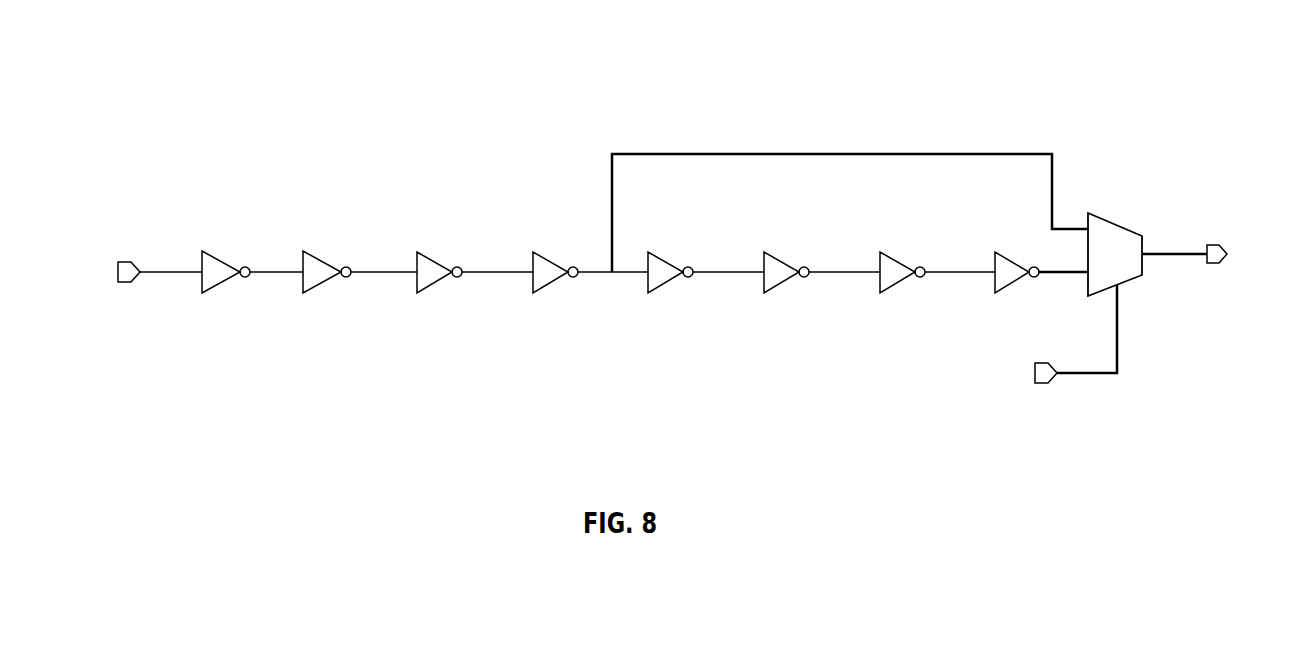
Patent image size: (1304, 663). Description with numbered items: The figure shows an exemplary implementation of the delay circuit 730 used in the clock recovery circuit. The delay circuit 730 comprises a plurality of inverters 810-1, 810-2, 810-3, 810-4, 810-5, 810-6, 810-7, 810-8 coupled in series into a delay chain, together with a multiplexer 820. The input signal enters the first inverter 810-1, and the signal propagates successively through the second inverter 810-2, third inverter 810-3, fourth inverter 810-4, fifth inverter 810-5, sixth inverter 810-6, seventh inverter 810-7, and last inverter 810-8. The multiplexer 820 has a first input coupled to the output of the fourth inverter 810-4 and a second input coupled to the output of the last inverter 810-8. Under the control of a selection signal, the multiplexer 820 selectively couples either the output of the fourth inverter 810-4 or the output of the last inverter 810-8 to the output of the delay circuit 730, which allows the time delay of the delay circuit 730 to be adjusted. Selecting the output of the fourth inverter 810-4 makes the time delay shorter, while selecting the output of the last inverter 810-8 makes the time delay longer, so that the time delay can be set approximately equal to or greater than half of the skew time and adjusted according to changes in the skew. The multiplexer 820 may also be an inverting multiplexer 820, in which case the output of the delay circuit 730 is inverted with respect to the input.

The delay circuit 730 is at (205, 52).
The inverter 810-1 is at (222, 287).
The inverter 810-2 is at (323, 287).
The inverter 810-3 is at (433, 284).
The fourth inverter 810-4 is at (551, 284).
The inverter 810-5 is at (668, 282).
The inverter 810-6 is at (784, 282).
The inverter 810-7 is at (899, 282).
The last inverter 810-8 is at (1016, 285).
The multiplexer 820 is at (1143, 242).